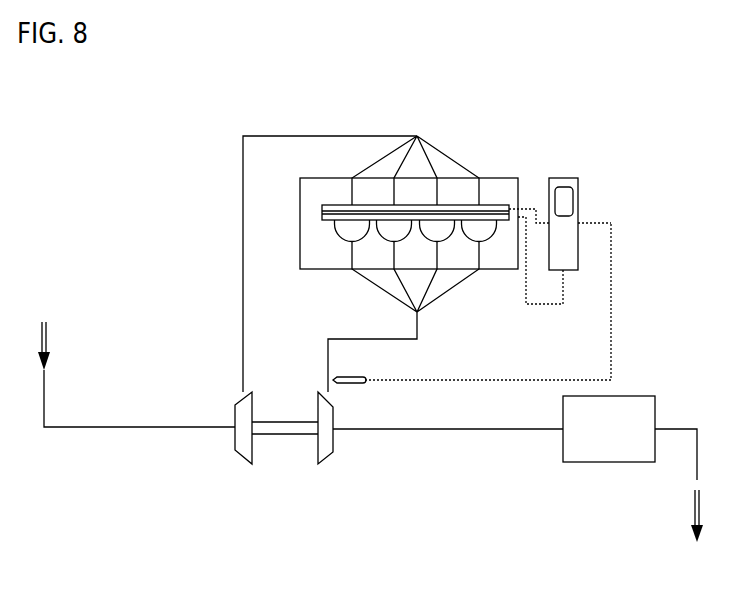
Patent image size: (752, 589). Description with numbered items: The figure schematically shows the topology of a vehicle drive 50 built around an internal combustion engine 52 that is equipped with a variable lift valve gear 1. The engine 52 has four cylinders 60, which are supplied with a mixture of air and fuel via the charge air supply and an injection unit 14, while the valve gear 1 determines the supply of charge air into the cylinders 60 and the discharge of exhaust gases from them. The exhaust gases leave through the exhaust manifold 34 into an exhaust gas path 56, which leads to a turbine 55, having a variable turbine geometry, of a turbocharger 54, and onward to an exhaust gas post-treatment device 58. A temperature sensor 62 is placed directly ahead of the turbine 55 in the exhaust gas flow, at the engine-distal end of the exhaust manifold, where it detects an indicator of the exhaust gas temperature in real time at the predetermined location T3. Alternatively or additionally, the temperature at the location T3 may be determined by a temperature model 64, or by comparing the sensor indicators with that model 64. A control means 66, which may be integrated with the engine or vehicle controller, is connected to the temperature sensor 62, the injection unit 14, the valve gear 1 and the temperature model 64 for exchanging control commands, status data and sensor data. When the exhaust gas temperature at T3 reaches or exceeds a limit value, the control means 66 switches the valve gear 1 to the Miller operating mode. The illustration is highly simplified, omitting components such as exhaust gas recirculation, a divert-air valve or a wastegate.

The vehicle drive 50 is at (677, 73).
The internal combustion engine 52 is at (495, 174).
The injection unit 14 is at (314, 208).
The variable lift valve gear 1 is at (314, 217).
The cylinders 60 is at (320, 228).
The exhaust manifold 34 is at (360, 287).
The exhaust gas path 56 is at (386, 356).
The temperature sensor 62 is at (351, 397).
The predetermined location T3 is at (318, 378).
The turbine 55 is at (331, 470).
The turbocharger 54 is at (284, 458).
The exhaust gas post-treatment device 58 is at (609, 429).
The control means 66 is at (560, 241).
The temperature model 64 is at (584, 202).